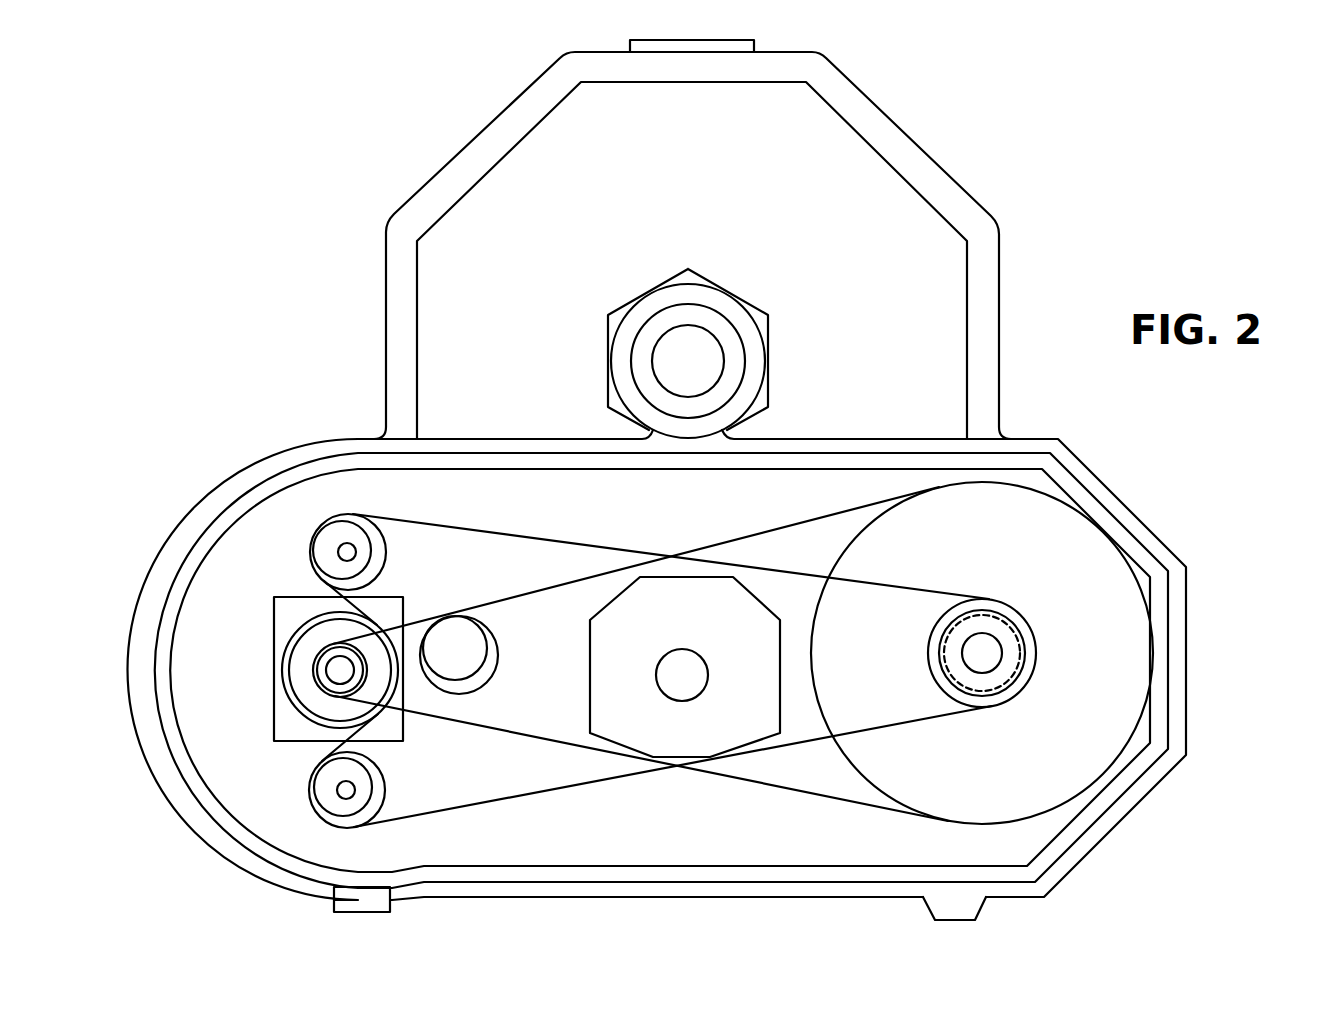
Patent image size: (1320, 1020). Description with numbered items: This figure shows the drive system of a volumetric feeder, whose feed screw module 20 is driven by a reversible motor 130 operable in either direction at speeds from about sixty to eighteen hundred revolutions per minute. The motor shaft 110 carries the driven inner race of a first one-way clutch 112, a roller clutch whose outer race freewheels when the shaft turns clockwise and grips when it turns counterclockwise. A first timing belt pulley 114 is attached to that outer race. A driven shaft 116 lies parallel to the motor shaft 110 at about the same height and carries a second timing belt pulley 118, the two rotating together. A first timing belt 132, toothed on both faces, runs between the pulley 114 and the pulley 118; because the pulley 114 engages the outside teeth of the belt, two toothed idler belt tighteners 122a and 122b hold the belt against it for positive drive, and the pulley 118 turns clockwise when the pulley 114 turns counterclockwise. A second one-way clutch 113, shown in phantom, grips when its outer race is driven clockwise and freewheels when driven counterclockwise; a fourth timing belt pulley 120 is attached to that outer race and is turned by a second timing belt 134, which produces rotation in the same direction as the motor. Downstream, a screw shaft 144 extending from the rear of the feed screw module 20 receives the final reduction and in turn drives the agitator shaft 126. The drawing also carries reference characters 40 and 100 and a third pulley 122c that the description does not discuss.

The feed screw module 20 is at (590, 664).
The housing 40 is at (1027, 439).
The drive assembly 100 is at (283, 785).
The motor shaft 110 is at (327, 679).
The first one-way clutch 112 is at (327, 667).
The second one-way clutch 113 is at (988, 614).
The first timing belt pulley 114 is at (298, 633).
The driven shaft 116 is at (1000, 662).
The second timing belt pulley 118 is at (1022, 614).
The fourth timing belt pulley 120 is at (1007, 822).
The belt tightener 122a is at (337, 514).
The belt tightener 122b is at (356, 821).
The third idler pulley 122c is at (494, 660).
The agitator shaft 126 is at (722, 378).
The reversible motor 130 is at (303, 597).
The first timing belt 132 is at (548, 540).
The second timing belt 134 is at (718, 773).
The screw shaft 144 is at (676, 697).